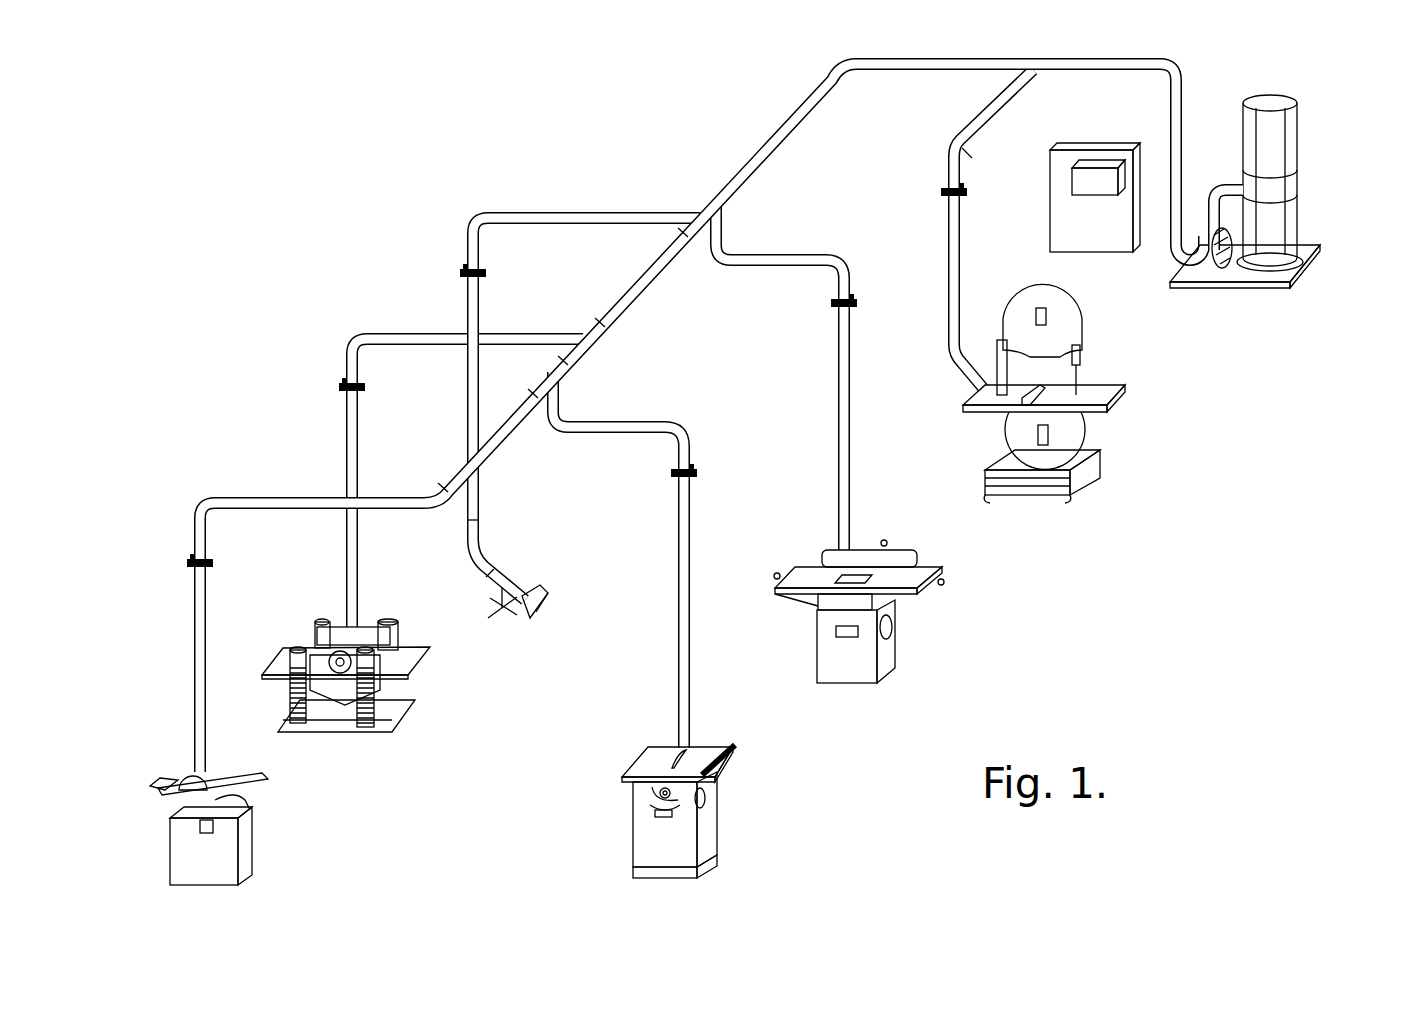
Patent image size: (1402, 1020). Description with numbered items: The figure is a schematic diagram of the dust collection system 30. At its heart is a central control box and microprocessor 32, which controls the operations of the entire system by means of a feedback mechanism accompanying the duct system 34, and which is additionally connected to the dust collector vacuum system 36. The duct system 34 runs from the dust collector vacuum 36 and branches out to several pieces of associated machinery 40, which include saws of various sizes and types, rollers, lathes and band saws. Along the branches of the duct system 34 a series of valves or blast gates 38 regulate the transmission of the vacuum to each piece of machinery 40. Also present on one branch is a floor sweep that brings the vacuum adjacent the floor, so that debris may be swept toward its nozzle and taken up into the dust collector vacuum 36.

The dust collection system 30 is at (452, 180).
The central control box and microprocessor 32 is at (1100, 165).
The duct system 34 is at (546, 213).
The dust collector vacuum system 36 is at (1295, 185).
The blast gates 38 is at (190, 561).
The associated machinery 40 is at (220, 848).